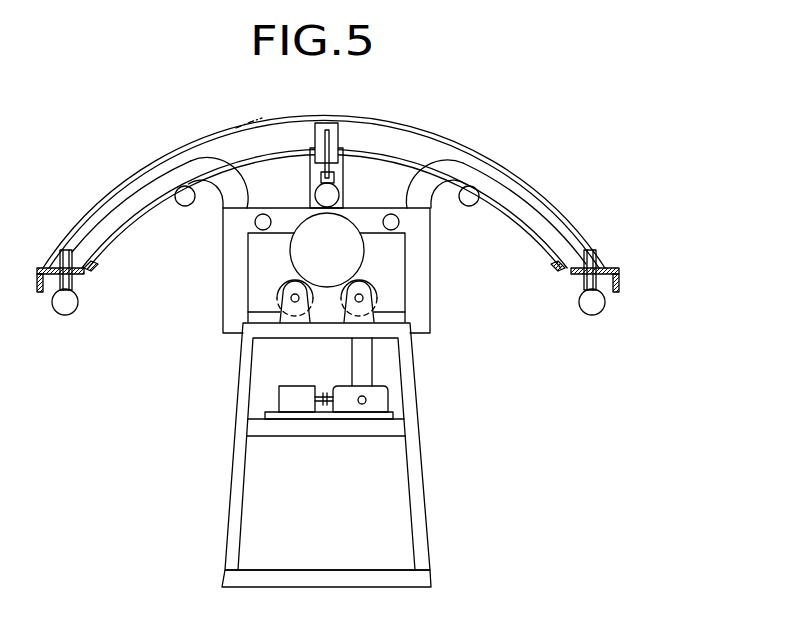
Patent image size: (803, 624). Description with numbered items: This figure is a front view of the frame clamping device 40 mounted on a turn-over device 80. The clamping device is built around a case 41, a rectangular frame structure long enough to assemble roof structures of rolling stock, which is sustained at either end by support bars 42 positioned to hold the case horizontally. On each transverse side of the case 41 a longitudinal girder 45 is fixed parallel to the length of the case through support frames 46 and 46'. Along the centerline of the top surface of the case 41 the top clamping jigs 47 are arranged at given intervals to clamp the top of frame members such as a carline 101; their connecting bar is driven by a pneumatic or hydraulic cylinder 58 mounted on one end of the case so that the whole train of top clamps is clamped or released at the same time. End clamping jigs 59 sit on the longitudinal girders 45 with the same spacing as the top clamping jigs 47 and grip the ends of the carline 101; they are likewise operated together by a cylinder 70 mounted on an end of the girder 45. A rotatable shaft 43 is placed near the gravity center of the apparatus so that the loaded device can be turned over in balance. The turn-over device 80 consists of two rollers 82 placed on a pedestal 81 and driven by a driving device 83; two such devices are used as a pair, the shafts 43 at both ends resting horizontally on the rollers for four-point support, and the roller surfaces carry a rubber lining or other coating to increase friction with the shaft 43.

The frame clamping device 40 is at (534, 168).
The carline 101 is at (240, 124).
The support frame 46 is at (329, 232).
The support frame 46' is at (313, 232).
The end clamping jig 59 is at (66, 250).
The longitudinal girder 45 is at (40, 268).
The pneumatic or hydraulic cylinder 70 is at (64, 315).
The case 41 is at (237, 250).
The support bar 42 is at (255, 222).
The rotatable shaft 43 is at (353, 260).
The top clamping jig 47 is at (338, 140).
The pneumatic or hydraulic cylinder 58 is at (340, 188).
The roller 82 is at (277, 292).
The turn-over device 80 is at (512, 467).
The pedestal 81 is at (413, 407).
The driving device 83 is at (352, 408).